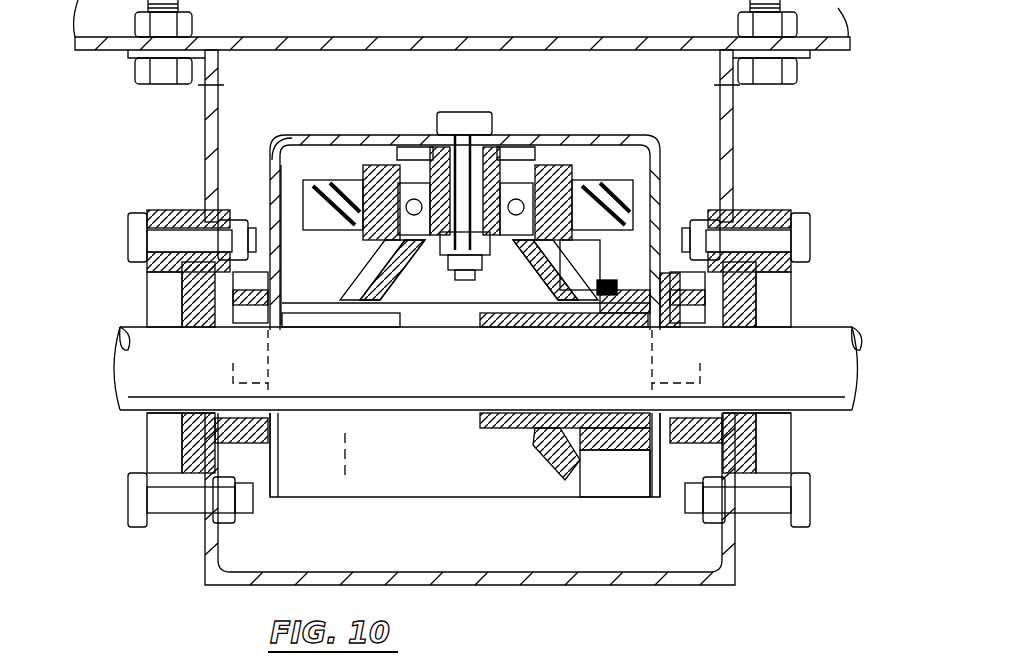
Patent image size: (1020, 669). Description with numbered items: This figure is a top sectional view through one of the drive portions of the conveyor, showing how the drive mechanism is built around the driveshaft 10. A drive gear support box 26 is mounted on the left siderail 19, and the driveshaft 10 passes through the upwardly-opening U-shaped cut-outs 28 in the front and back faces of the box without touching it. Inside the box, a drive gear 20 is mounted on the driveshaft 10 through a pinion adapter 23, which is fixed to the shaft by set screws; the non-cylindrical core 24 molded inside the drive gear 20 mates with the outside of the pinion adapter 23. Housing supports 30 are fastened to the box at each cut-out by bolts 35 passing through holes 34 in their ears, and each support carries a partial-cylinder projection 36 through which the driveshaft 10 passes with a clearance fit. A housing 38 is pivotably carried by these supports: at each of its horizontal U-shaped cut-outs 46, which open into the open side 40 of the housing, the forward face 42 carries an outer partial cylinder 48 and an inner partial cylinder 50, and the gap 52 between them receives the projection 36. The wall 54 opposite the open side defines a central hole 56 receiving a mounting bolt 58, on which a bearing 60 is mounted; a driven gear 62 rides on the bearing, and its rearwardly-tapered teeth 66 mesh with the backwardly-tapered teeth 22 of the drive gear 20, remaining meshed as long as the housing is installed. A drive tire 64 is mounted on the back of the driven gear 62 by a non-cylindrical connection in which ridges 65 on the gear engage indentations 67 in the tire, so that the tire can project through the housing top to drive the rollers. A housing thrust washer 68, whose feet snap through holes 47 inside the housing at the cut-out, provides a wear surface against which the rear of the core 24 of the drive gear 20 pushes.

The driveshaft 10 is at (117, 335).
The left siderail 19 is at (92, 52).
The drive gear 20 is at (575, 470).
The teeth 22 is at (545, 465).
The pinion adapter 23 is at (480, 432).
The core 24 is at (615, 470).
The drive gear support box 26 is at (735, 120).
The U-shaped cut-outs 28 is at (180, 440).
The housing supports 30 is at (150, 210).
The holes 34 is at (803, 240).
The bolts 35 is at (135, 236).
The projection 36 is at (260, 455).
The housing 38 is at (281, 134).
The open side 40 is at (505, 497).
The forward face 42 is at (268, 163).
The U-shaped cut-outs 46 is at (278, 500).
The holes 47 is at (668, 258).
The outer partial cylinder 48 is at (280, 262).
The inner partial cylinder 50 is at (238, 330).
The gap 52 is at (267, 276).
The wall 54 is at (340, 135).
The central hole 56 is at (480, 135).
The mounting bolt 58 is at (452, 112).
The bearing 60 is at (510, 215).
The driven gear 62 is at (380, 290).
The drive tire 64 is at (282, 200).
The ridges 65 is at (351, 196).
The teeth 66 is at (378, 327).
The indentations 67 is at (560, 190).
The housing thrust washer 68 is at (650, 300).